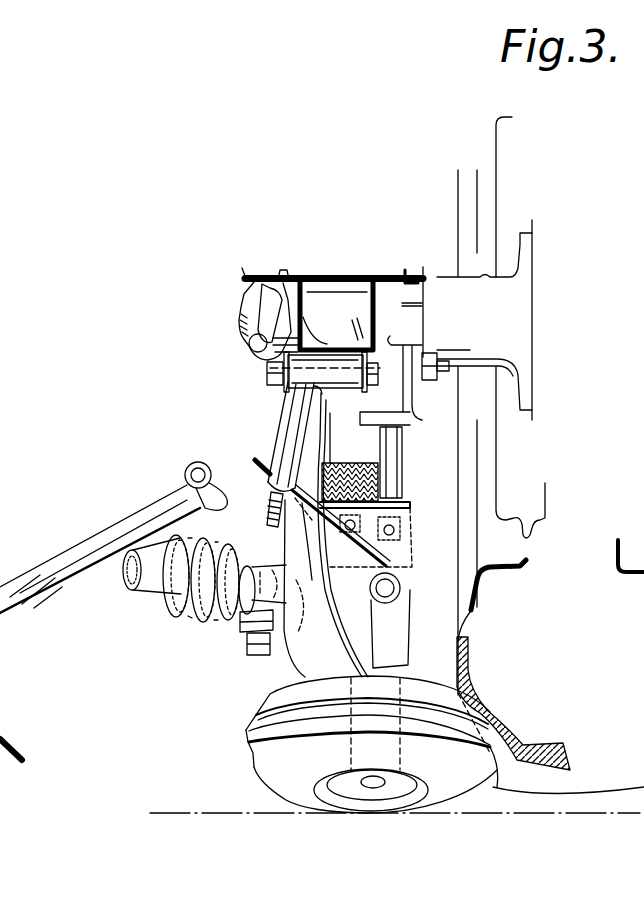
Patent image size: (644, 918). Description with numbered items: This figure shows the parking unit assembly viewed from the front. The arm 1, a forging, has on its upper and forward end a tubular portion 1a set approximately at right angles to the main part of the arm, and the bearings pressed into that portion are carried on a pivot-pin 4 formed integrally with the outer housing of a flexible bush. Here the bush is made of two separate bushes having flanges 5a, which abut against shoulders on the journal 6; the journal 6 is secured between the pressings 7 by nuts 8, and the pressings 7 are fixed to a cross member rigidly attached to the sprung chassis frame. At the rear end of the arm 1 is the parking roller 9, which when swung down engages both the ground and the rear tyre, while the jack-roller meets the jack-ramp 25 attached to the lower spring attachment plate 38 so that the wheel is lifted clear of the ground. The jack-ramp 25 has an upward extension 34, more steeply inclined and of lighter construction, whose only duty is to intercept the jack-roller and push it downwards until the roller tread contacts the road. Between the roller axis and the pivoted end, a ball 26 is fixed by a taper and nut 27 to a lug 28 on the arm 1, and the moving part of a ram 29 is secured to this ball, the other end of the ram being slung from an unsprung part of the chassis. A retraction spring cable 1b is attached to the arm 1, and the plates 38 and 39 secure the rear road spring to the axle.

The arm 1 is at (353, 640).
The tubular portion 1a is at (277, 452).
The retraction spring cable 1b is at (13, 730).
The pivot-pin 4 is at (270, 505).
The flanges 5a is at (284, 390).
The journal 6 is at (380, 376).
The pressings 7 is at (280, 340).
The nuts 8 is at (270, 375).
The parking roller 9 is at (243, 722).
The jack-ramp 25 is at (333, 543).
The ball 26 is at (261, 580).
The nut 27 is at (249, 651).
The lug 28 is at (238, 633).
The ram 29 is at (150, 587).
The upward extension 34 is at (263, 472).
The lower spring attachment plate 38 is at (402, 418).
The plate 39 is at (410, 506).